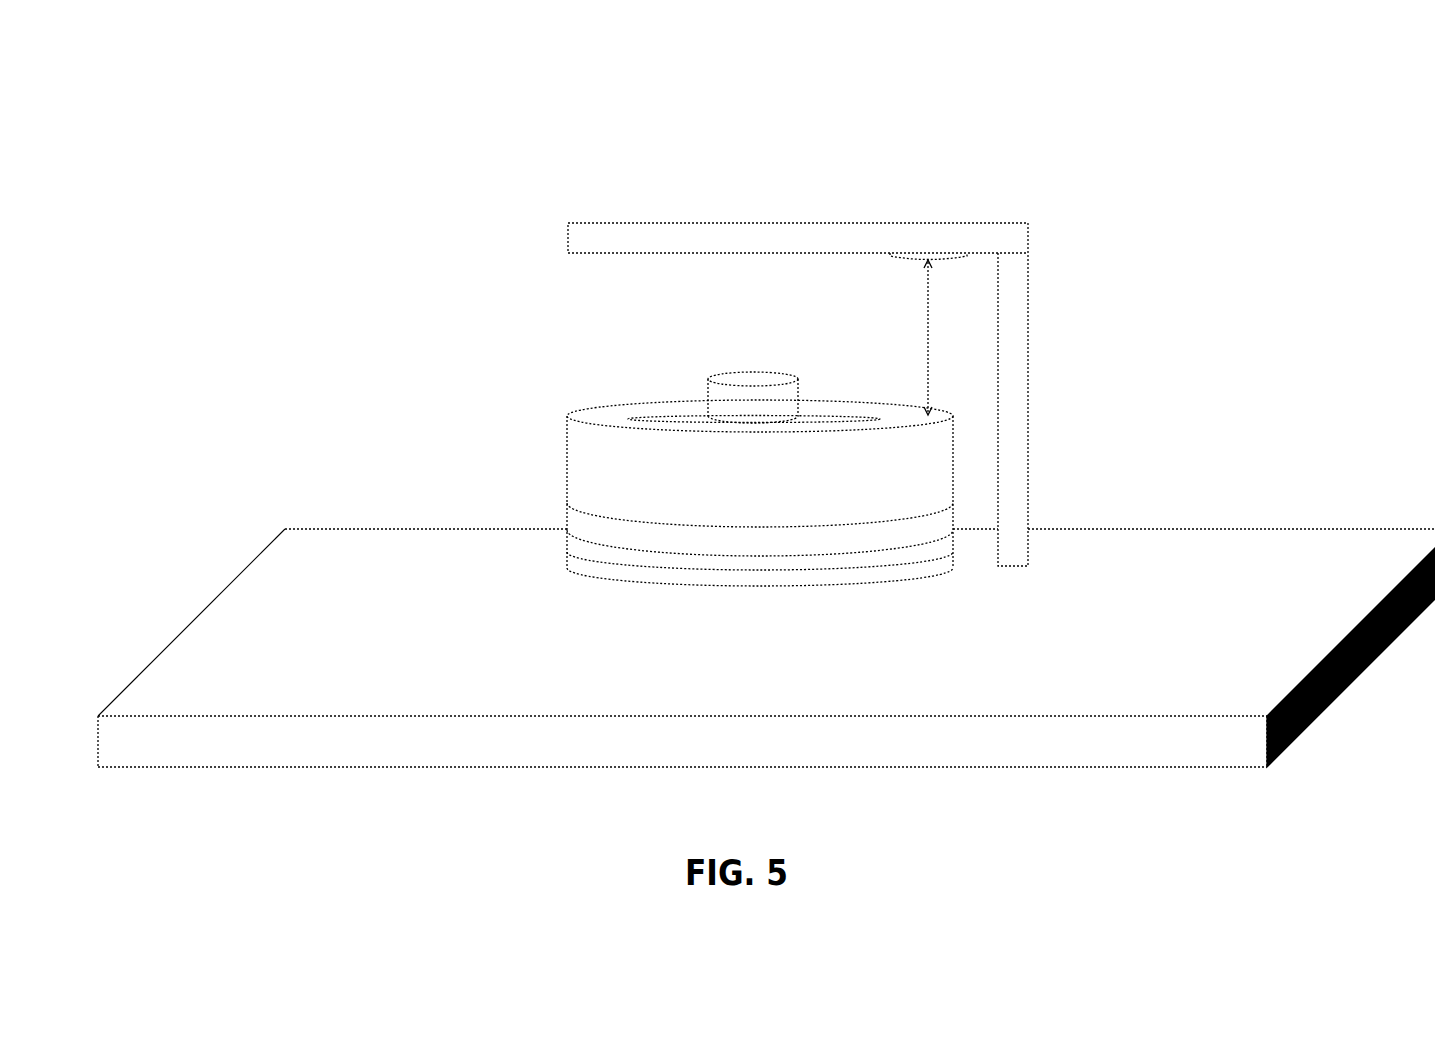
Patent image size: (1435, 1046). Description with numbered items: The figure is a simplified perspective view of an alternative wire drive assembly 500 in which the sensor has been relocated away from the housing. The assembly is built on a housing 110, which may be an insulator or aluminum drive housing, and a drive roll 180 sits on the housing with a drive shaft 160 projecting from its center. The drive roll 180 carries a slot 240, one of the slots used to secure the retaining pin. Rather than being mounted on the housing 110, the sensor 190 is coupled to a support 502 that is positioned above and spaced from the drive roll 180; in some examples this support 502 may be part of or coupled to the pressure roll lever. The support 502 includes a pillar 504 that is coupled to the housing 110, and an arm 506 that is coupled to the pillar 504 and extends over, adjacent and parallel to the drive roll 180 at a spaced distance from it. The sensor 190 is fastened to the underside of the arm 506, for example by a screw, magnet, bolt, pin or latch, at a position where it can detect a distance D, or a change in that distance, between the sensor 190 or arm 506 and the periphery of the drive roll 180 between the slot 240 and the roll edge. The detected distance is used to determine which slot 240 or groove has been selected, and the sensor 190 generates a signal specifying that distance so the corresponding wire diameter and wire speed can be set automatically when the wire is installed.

The housing 110 is at (98, 741).
The drive shaft 160 is at (753, 372).
The drive roll 180 is at (532, 438).
The sensor 190 is at (976, 249).
The slot 240 is at (676, 420).
The wire drive assembly 500 is at (1186, 106).
The support 502 is at (1062, 442).
The pillar 504 is at (1013, 395).
The arm 506 is at (798, 222).